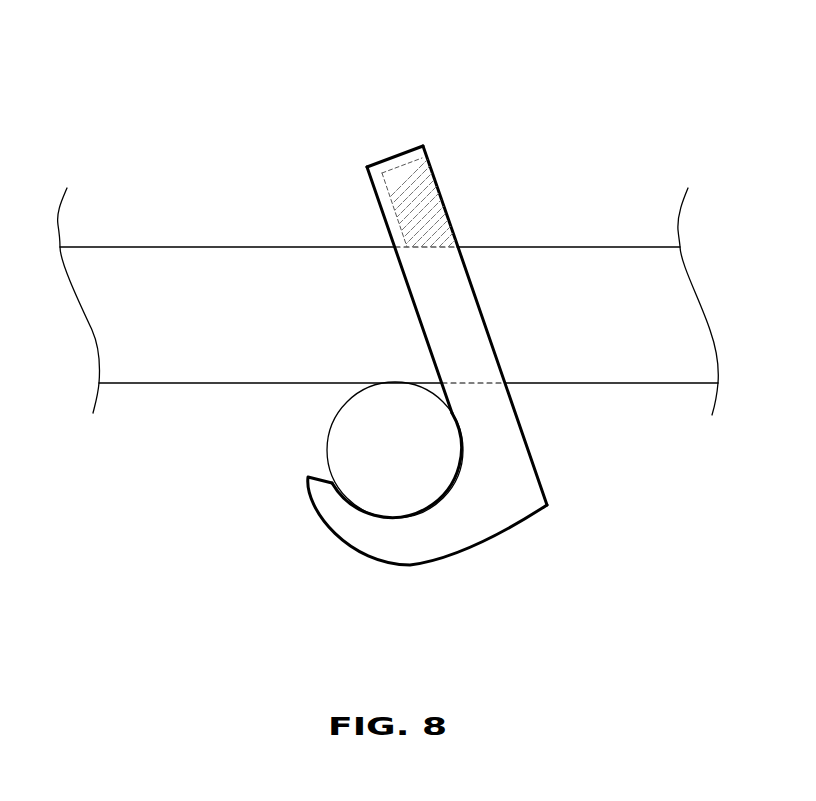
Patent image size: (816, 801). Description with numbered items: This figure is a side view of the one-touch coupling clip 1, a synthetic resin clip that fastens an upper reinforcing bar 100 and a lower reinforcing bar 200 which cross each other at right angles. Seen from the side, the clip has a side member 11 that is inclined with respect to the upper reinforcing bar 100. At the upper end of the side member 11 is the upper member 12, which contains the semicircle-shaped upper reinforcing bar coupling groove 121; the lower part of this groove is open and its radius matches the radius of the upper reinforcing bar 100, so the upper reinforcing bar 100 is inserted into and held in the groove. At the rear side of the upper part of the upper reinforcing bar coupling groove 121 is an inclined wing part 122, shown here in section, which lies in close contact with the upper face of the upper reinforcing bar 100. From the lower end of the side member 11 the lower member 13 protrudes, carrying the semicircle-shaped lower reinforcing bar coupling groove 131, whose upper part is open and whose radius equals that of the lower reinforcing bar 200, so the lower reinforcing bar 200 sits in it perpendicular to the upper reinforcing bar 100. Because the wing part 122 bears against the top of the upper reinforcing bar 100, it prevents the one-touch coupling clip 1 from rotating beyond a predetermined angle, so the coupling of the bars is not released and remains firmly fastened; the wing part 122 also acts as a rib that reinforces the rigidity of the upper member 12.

The one-touch coupling clip 1 is at (418, 313).
The side member 11 is at (490, 340).
The upper member 12 is at (419, 202).
The upper reinforcing bar coupling groove 121 is at (394, 248).
The inclined wing part 122 is at (433, 178).
The lower member 13 is at (401, 519).
The lower reinforcing bar coupling groove 131 is at (443, 500).
The upper reinforcing bar 100 is at (530, 247).
The lower reinforcing bar 200 is at (328, 435).